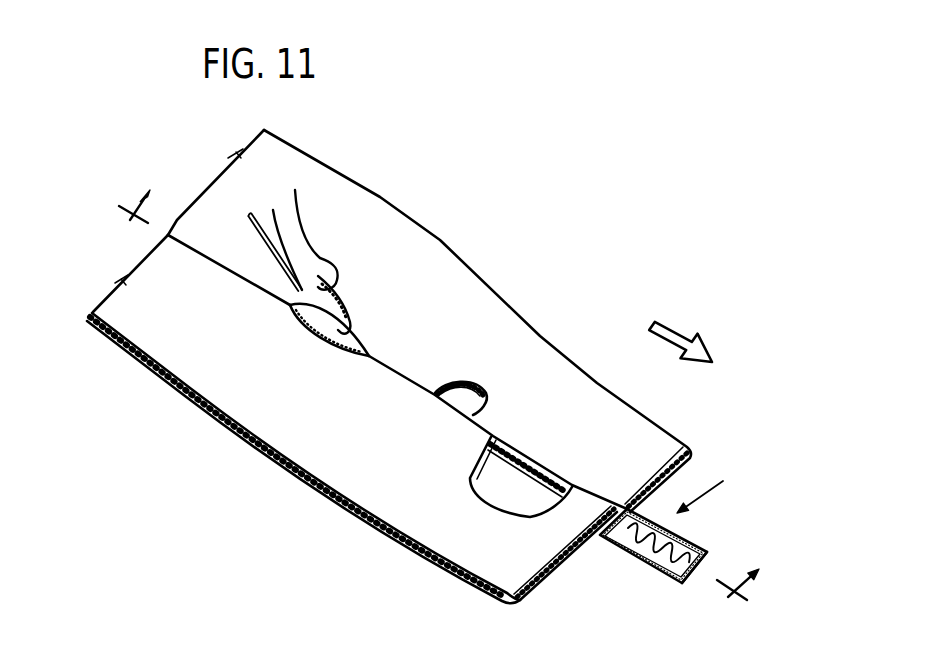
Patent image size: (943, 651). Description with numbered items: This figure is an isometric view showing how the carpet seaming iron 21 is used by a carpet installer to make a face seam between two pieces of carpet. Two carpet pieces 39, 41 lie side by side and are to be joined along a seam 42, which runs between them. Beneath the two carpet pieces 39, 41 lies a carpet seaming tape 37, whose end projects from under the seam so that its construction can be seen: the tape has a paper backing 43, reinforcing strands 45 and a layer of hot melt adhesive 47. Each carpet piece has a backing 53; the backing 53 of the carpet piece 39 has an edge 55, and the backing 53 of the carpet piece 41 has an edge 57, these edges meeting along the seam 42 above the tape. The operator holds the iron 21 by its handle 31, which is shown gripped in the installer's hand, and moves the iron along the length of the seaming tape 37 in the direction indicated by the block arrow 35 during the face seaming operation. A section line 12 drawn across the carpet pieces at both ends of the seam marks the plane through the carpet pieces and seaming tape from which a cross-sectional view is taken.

The section line 12 is at (450, 381).
The carpet seaming iron 21 is at (366, 298).
The handle 31 is at (340, 301).
The block arrow 35 is at (673, 334).
The carpet seaming tape 37 is at (718, 488).
The carpet piece 39 is at (483, 307).
The carpet piece 41 is at (310, 448).
The seam 42 is at (237, 283).
The paper backing 43 is at (688, 574).
The reinforcing strands 45 is at (683, 538).
The layer of hot melt adhesive 47 is at (657, 557).
The backing 53 is at (377, 518).
The edge 55 is at (523, 455).
The edge 57 is at (450, 403).